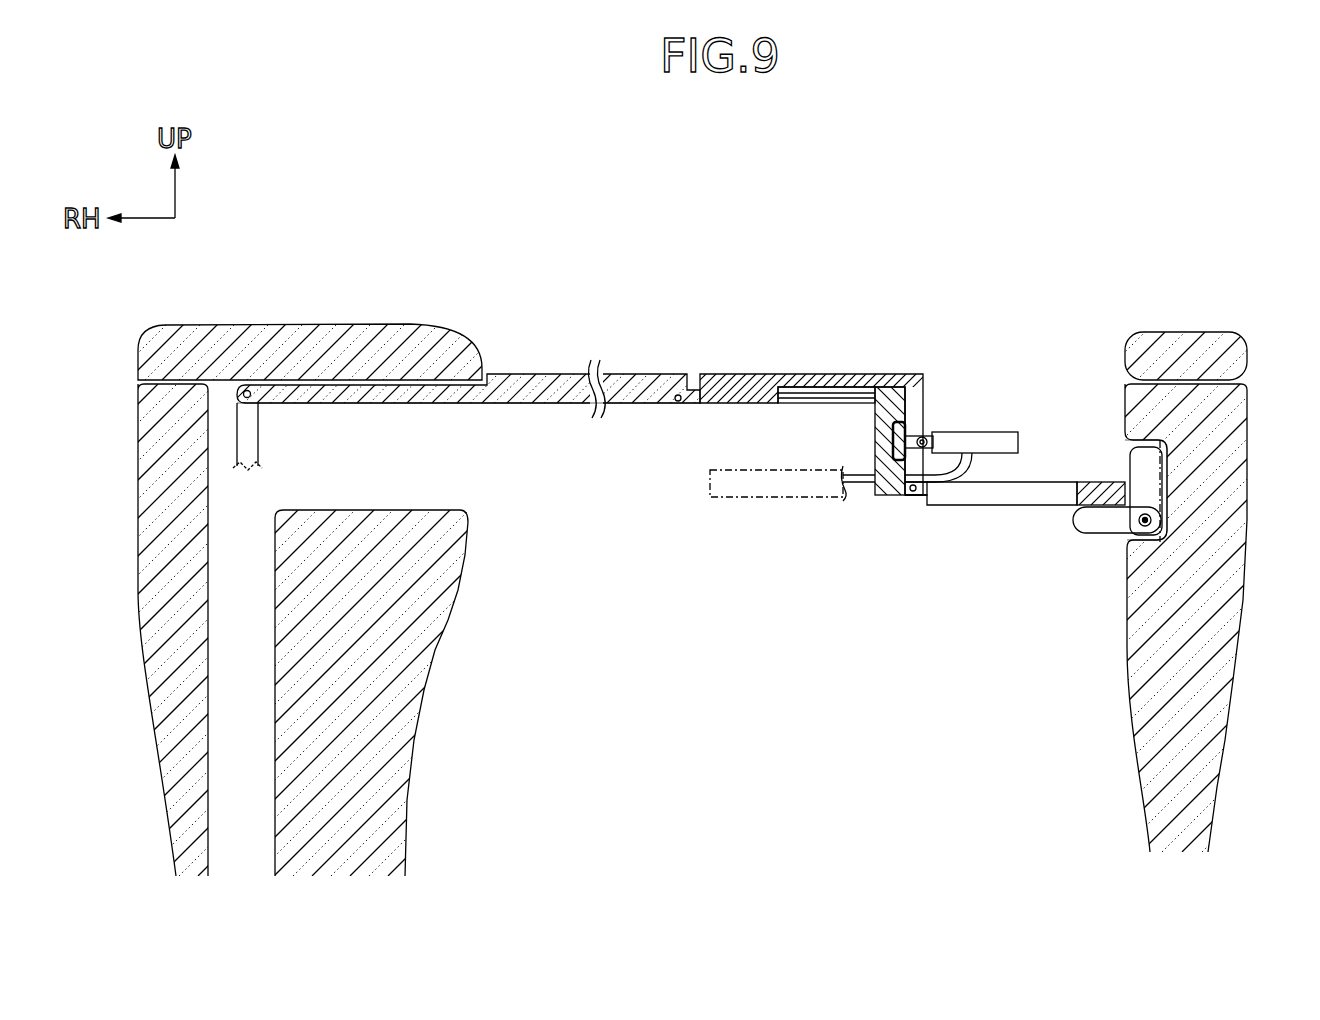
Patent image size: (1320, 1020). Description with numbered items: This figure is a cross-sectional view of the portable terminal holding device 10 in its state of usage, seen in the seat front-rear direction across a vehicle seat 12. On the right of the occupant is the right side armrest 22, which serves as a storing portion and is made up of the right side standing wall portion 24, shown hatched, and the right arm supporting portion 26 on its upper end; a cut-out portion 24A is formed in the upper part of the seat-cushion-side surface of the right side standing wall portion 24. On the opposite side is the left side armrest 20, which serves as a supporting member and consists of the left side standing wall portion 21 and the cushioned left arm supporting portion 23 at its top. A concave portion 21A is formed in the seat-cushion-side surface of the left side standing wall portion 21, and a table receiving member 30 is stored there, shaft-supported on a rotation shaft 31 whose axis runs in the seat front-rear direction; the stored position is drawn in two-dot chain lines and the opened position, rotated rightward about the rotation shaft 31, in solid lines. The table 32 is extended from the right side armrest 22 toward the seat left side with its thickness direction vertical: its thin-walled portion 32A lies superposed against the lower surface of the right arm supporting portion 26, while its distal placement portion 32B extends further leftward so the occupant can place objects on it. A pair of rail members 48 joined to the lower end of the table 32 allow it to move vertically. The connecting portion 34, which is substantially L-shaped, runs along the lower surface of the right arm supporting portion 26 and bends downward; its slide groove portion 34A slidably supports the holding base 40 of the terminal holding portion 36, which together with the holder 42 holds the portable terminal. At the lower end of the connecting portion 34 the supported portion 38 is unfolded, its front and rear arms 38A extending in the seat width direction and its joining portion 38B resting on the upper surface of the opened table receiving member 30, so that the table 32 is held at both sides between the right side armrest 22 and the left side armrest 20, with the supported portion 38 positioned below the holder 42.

The portable terminal holding device 10 is at (510, 357).
The vehicle seat 12 is at (424, 482).
The left side armrest 20 is at (1005, 540).
The left side standing wall portion 21 is at (1138, 753).
The concave portion 21A is at (1167, 452).
The right side armrest 22 is at (424, 537).
The left arm supporting portion 23 is at (1172, 332).
The right side standing wall portion 24 is at (435, 648).
The cut-out portion 24A is at (467, 506).
The right arm supporting portion 26 is at (292, 325).
The table receiving member 30 is at (1122, 458).
The rotation shaft 31 is at (1150, 520).
The table 32 is at (532, 372).
The thin-walled portion 32A is at (355, 405).
The placement portion 32B is at (641, 405).
The connecting portion 34 is at (773, 372).
The slide groove portion 34A is at (850, 375).
The terminal holding portion 36 is at (948, 418).
The supported portion 38 is at (771, 499).
The arm 38A is at (940, 507).
The joining portion 38B is at (1093, 481).
The holding base 40 is at (873, 430).
The holder 42 is at (1012, 430).
The rail member 48 is at (236, 453).